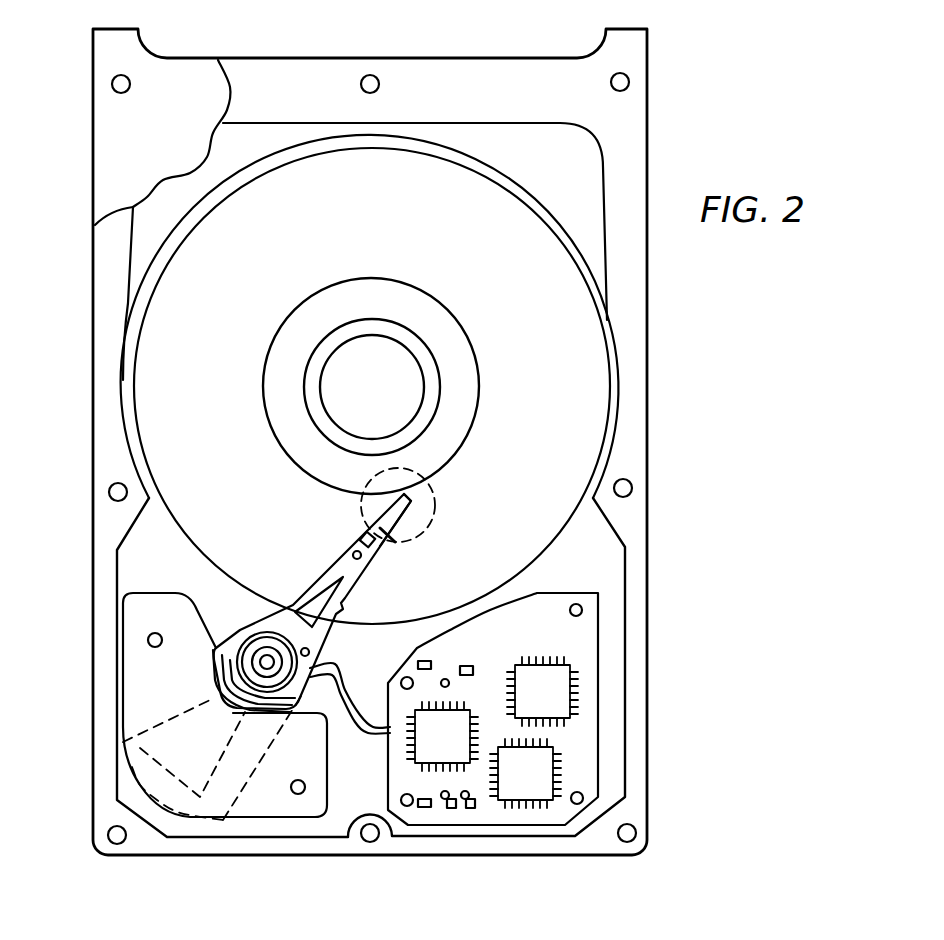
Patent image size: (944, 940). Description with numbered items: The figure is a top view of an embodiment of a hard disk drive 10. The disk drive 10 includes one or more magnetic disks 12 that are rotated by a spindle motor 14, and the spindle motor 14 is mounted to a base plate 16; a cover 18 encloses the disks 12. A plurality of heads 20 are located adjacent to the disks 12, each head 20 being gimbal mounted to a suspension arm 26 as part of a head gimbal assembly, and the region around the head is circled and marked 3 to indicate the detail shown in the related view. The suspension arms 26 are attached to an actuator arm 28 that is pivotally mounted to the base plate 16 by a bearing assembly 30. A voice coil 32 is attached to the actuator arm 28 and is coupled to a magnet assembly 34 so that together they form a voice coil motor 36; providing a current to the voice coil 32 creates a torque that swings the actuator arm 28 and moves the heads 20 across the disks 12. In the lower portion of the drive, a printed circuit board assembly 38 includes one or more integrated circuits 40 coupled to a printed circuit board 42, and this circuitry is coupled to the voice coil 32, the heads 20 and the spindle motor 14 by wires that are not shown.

The hard disk drive 10 is at (638, 368).
The magnetic disk 12 is at (372, 386).
The spindle motor 14 is at (372, 384).
The base plate 16 is at (587, 209).
The cover 18 is at (108, 134).
The head 20 is at (407, 498).
The suspension arm 26 is at (380, 528).
The actuator arm 28 is at (272, 617).
The bearing assembly 30 is at (253, 677).
The voice coil 32 is at (197, 805).
The magnet assembly 34 is at (275, 807).
The voice coil motor 36 is at (105, 741).
The printed circuit board assembly 38 is at (577, 735).
The integrated circuit 40 is at (517, 775).
The printed circuit board 42 is at (580, 640).
The detail region shown in FIG. 3 is at (436, 505).